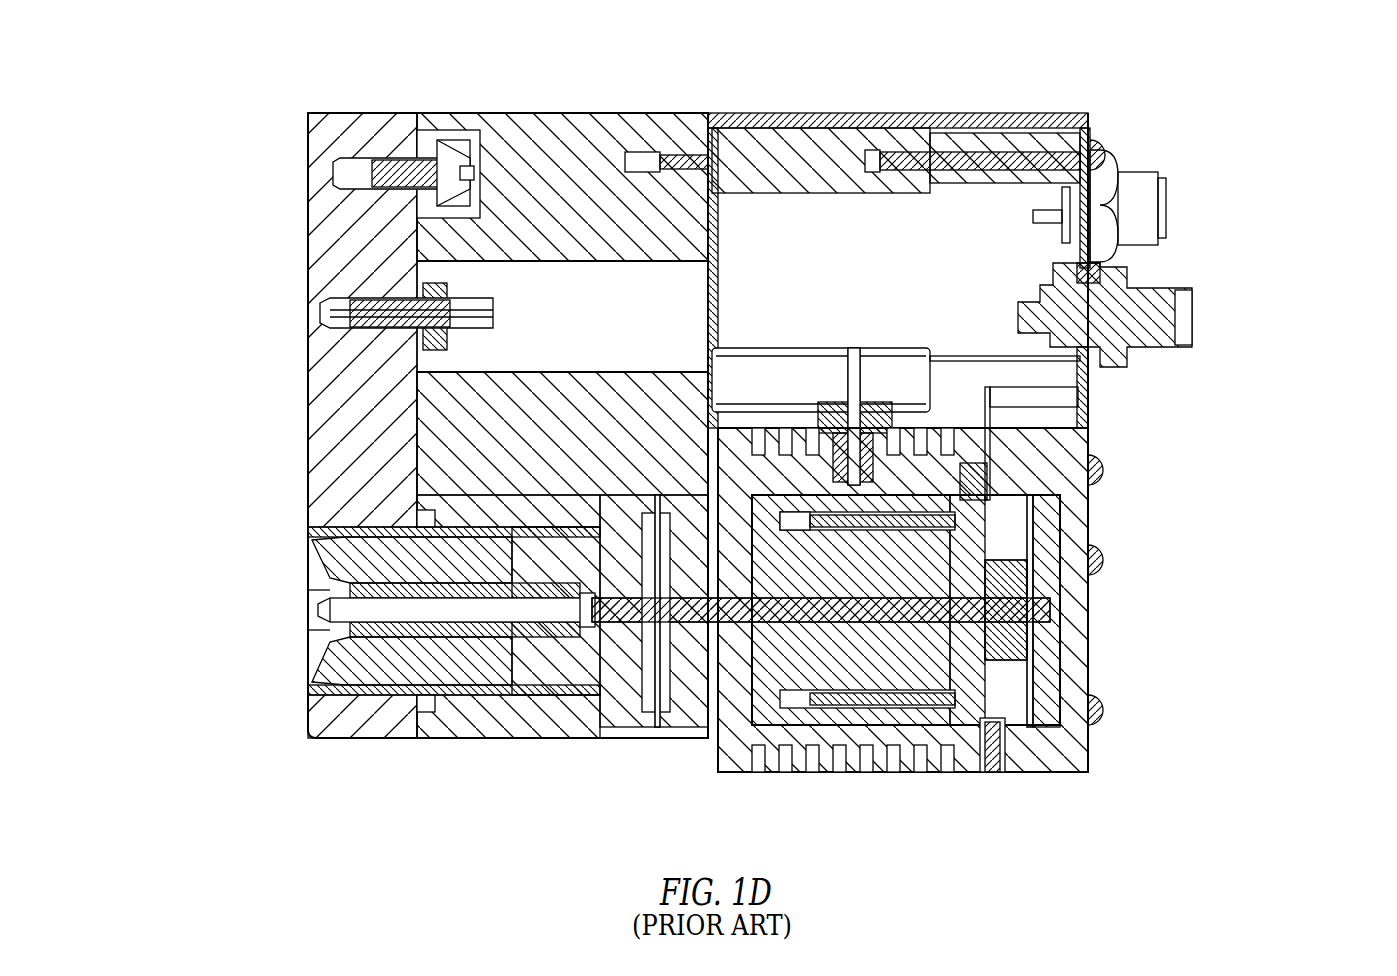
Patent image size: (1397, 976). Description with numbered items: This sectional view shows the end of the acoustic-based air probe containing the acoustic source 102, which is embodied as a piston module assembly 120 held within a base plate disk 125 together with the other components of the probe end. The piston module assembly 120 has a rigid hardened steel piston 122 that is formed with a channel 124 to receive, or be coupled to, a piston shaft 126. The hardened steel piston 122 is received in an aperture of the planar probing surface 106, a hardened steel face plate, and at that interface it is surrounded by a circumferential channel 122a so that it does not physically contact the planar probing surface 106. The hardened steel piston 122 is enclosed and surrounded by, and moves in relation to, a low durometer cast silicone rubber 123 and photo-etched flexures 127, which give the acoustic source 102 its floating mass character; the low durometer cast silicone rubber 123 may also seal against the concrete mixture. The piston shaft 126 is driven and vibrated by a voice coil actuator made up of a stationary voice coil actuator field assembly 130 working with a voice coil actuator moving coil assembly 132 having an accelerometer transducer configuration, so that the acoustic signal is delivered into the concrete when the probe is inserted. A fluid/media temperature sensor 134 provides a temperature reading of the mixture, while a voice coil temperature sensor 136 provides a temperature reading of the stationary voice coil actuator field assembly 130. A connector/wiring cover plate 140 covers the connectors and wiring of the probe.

The base plate disk 125 is at (525, 104).
The planar probing surface 106 is at (308, 168).
The fluid/media temperature sensor 134 is at (308, 310).
The low durometer cast silicone rubber 123 is at (375, 553).
The hardened steel piston 122 is at (330, 578).
The acoustic source 102 is at (262, 600).
The channel 124 is at (350, 607).
The circumferential channel 122a is at (285, 686).
The piston module assembly 120 is at (540, 655).
The piston shaft 126 is at (617, 623).
The photo-etched flexures 127 is at (655, 680).
The connector/wiring cover plate 140 is at (1060, 127).
The voice coil temperature sensor 136 is at (845, 400).
The stationary voice coil actuator field assembly 130 is at (870, 565).
The voice coil actuator moving coil assembly 132 is at (973, 681).